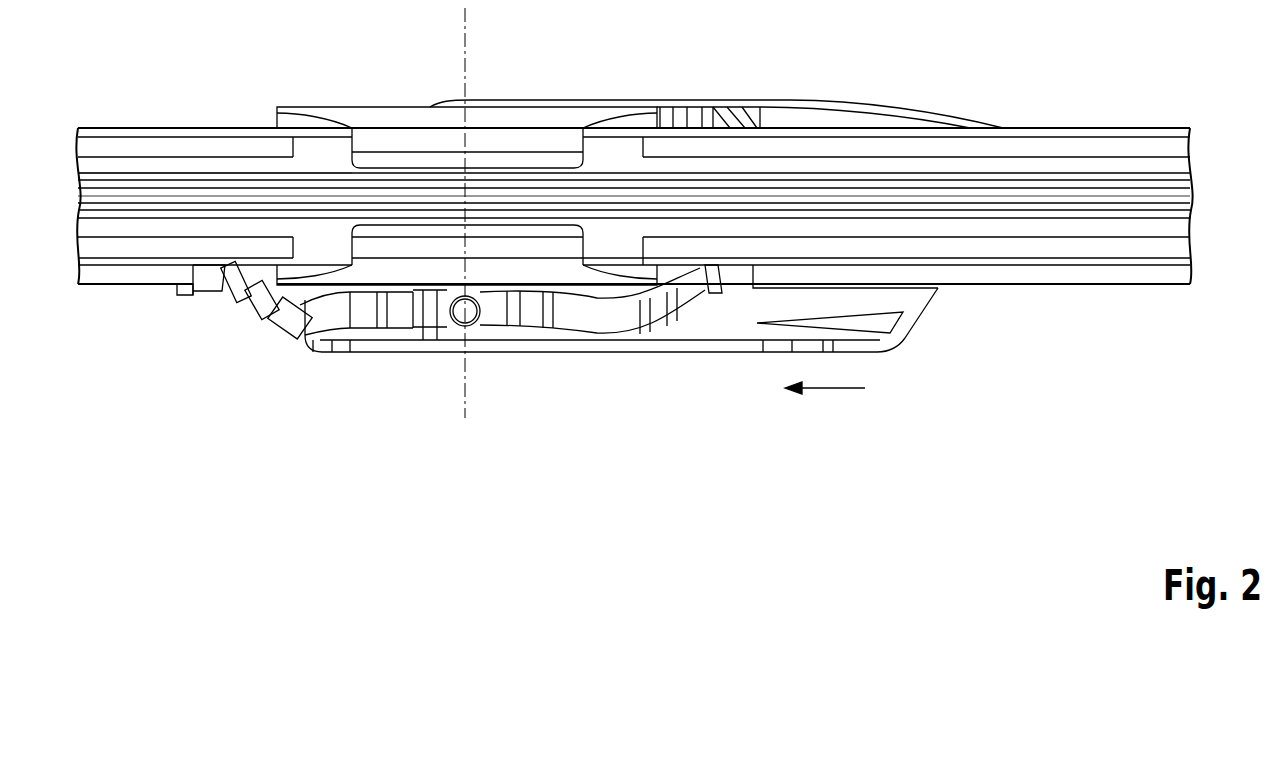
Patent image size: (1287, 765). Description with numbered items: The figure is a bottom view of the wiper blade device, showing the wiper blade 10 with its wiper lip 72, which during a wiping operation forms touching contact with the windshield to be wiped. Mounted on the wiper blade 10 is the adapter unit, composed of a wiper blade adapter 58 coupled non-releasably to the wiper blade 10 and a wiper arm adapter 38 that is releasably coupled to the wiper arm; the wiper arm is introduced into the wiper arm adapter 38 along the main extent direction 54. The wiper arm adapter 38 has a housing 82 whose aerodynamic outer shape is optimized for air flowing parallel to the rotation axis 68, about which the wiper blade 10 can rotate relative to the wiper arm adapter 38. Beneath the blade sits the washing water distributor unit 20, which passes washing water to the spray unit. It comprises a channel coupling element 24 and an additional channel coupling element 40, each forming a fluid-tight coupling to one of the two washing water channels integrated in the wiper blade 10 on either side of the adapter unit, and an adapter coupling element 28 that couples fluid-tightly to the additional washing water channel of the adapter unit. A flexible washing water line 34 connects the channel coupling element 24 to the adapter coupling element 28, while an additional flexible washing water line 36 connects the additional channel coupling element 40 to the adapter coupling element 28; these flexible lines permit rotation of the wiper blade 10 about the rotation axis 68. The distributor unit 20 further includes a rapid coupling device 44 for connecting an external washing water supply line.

The wiper blade 10 is at (1068, 145).
The washing water distributor unit 20 is at (382, 372).
The channel coupling element 24 is at (730, 290).
The adapter coupling element 28 is at (456, 318).
The flexible washing water line 34 is at (610, 322).
The additional flexible washing water line 36 is at (316, 318).
The wiper arm adapter 38 is at (873, 107).
The additional channel coupling element 40 is at (210, 285).
The rapid coupling device 44 is at (943, 311).
The main extent direction 54 is at (836, 390).
The wiper blade adapter 58 is at (376, 137).
The rotation axis 68 is at (478, 44).
The wiper lip 72 is at (176, 196).
The housing 82 is at (775, 107).